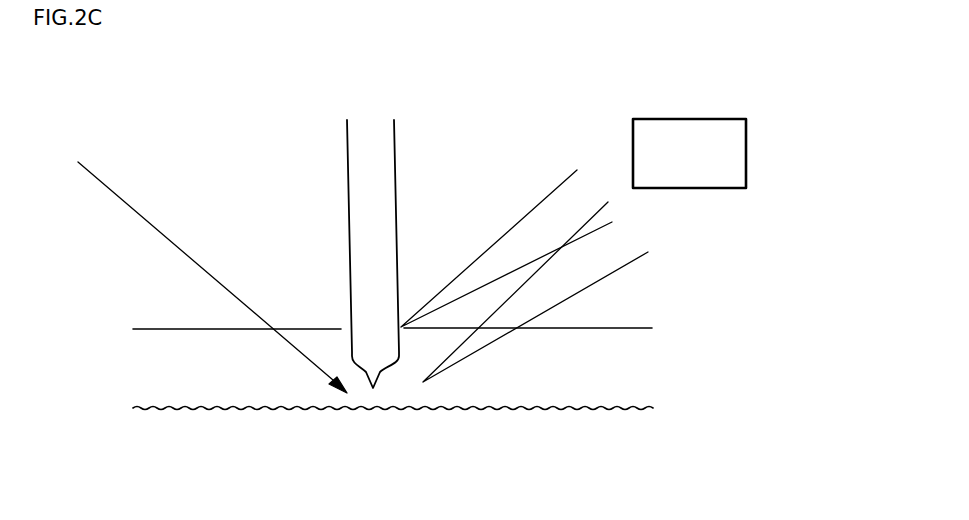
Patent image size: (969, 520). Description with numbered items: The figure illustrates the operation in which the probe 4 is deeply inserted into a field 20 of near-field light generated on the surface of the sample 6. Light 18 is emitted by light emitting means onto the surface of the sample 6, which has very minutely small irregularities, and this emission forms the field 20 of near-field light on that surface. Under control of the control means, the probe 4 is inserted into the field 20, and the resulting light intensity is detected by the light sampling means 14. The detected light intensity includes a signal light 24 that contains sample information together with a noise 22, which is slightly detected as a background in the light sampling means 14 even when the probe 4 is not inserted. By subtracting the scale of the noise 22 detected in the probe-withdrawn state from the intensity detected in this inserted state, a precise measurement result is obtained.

The probe 4 is at (385, 153).
The sample 6 is at (390, 458).
The light sampling means 14 is at (708, 119).
The light 18 is at (179, 249).
The field of near-field light 20 is at (610, 367).
The noise 22 is at (617, 255).
The signal light 24 is at (529, 223).